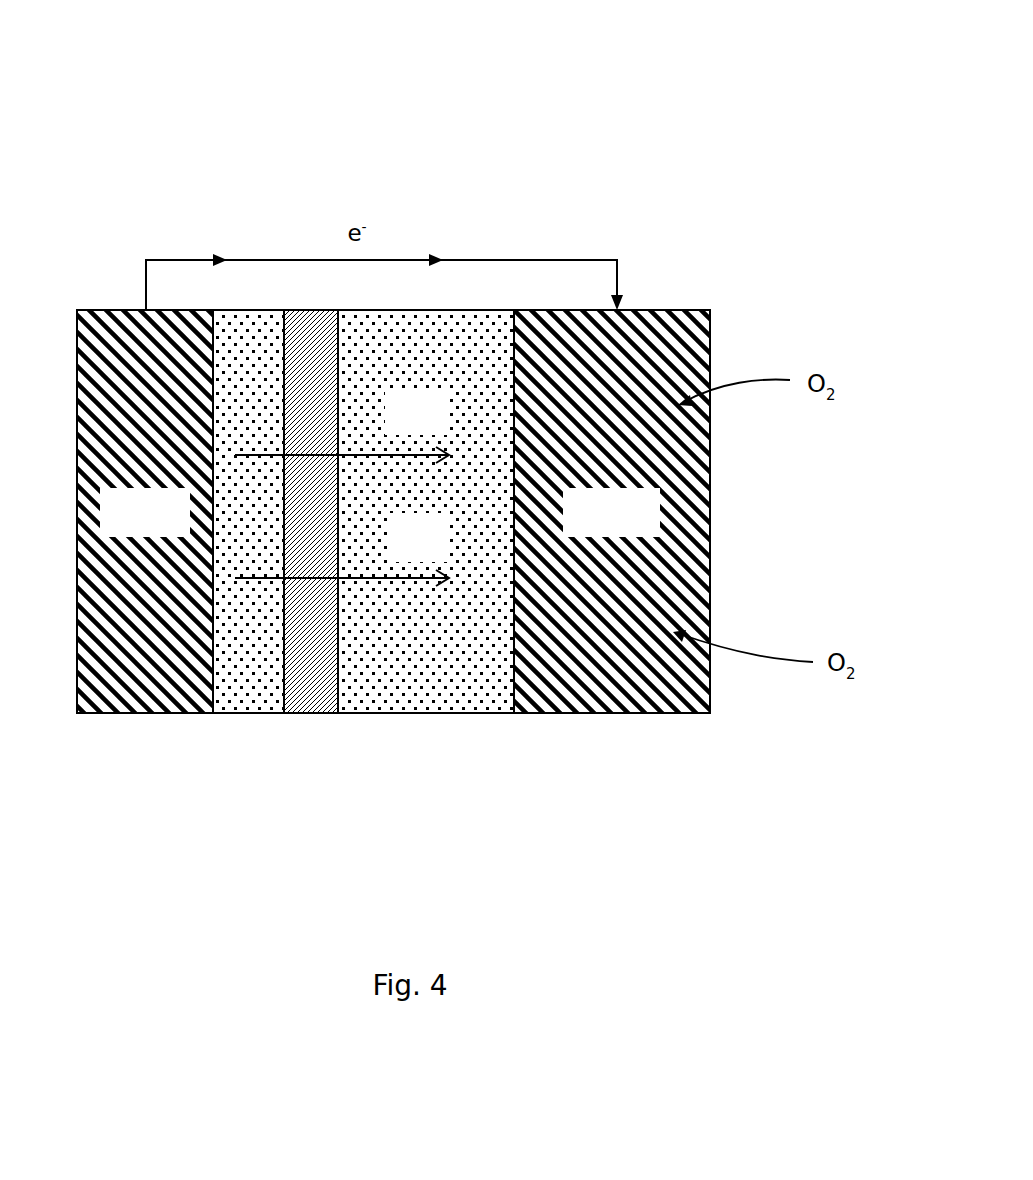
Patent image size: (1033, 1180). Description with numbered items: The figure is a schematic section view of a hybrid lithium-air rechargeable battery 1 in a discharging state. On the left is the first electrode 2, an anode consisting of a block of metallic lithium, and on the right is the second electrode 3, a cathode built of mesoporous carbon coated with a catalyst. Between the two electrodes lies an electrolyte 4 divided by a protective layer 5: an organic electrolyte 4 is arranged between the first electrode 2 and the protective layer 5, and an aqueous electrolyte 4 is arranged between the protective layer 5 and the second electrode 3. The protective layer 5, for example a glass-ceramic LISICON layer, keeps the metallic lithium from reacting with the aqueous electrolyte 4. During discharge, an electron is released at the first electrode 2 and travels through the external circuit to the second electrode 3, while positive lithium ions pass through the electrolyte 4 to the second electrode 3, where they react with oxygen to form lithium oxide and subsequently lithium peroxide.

The metal-air rechargeable battery 1 is at (622, 172).
The first electrode 2 is at (103, 332).
The second electrode 3 is at (652, 318).
The electrolyte 4 is at (250, 690).
The protective layer 5 is at (318, 692).